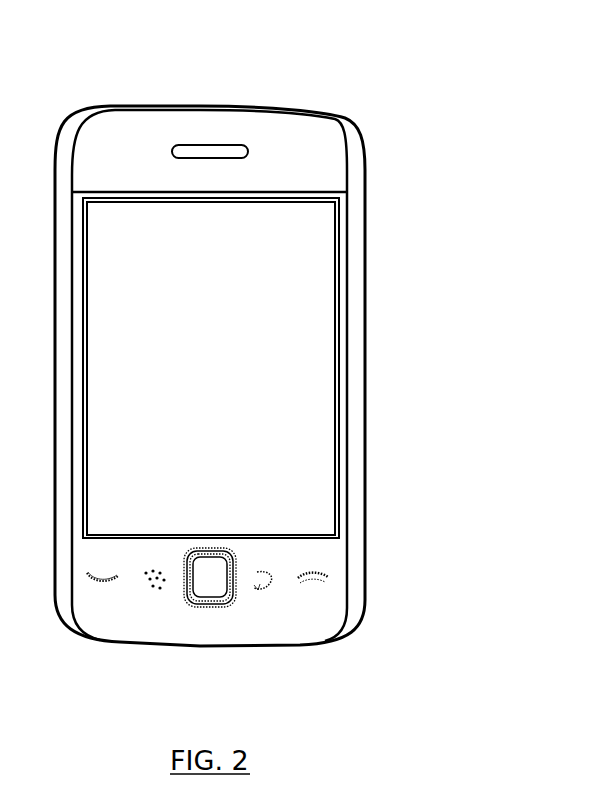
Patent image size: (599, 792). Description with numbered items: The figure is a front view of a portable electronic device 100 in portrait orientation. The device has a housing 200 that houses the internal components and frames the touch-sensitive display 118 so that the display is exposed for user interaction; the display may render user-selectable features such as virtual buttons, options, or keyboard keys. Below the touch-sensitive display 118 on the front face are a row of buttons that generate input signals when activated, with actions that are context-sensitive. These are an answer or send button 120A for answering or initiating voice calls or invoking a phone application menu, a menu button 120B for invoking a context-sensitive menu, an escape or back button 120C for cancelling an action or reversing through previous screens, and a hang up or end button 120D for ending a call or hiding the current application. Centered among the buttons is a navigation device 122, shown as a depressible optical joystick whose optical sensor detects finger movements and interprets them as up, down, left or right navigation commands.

The portable electronic device 100 is at (406, 132).
The housing 200 is at (355, 265).
The touch-sensitive display 118 is at (312, 365).
The navigation device 122 is at (206, 607).
The answer (or send) button 120A is at (98, 586).
The menu button 120B is at (152, 593).
The escape (or back) button 120C is at (265, 598).
The hang up (or end) button 120D is at (318, 599).